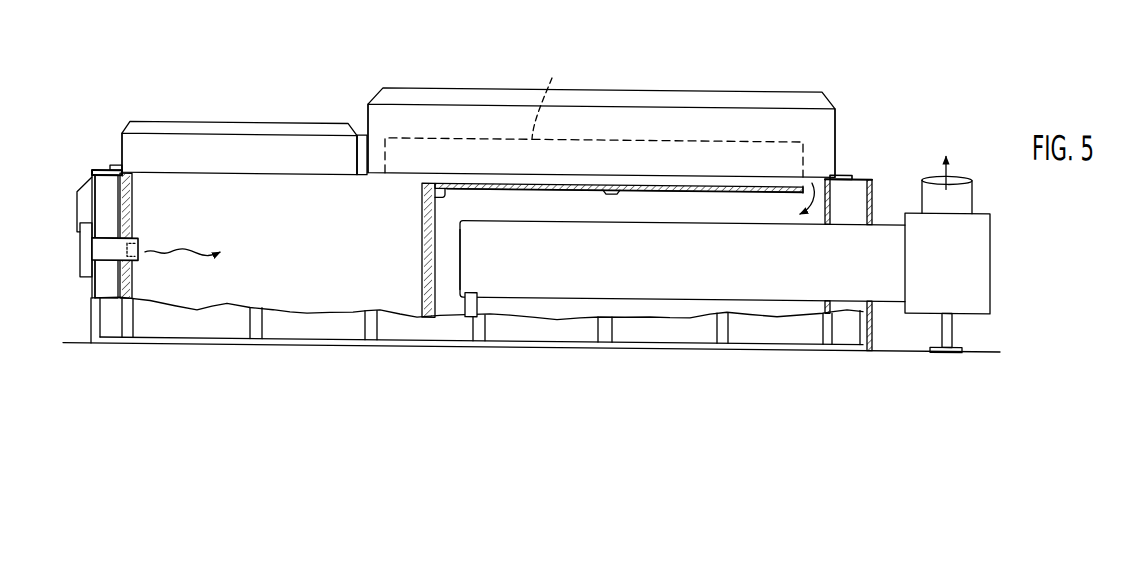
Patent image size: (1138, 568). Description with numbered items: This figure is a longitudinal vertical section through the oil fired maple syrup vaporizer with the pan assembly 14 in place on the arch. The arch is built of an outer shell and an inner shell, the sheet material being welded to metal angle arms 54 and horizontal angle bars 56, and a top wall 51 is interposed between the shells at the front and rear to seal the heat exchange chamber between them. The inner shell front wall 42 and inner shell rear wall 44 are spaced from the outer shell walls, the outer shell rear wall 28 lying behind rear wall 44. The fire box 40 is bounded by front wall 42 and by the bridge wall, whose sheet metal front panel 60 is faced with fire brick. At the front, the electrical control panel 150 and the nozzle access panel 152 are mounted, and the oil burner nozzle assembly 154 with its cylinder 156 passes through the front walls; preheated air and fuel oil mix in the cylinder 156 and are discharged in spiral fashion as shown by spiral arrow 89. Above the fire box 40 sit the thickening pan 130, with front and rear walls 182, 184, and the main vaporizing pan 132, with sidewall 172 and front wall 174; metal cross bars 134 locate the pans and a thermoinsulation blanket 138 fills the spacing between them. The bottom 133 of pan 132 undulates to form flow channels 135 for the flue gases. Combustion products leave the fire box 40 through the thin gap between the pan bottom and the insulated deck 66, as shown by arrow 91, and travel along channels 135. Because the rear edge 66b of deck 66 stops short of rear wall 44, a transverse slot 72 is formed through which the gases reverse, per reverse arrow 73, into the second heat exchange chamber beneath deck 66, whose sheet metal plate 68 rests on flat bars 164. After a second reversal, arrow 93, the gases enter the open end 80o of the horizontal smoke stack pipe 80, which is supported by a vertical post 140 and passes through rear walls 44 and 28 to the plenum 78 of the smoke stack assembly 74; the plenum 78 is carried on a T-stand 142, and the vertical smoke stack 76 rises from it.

The pan assembly 14 is at (598, 57).
The outer shell rear wall 28 is at (876, 197).
The fire box 40 is at (316, 270).
The inner shell front wall 42 is at (118, 199).
The inner shell rear wall 44 is at (828, 202).
The top wall 51 is at (103, 169).
The metal angle arms 54 is at (258, 330).
The horizontal angle bars 56 is at (548, 337).
The bridge wall front panel 60 is at (431, 258).
The insulated deck 66 is at (673, 178).
The rear edge of insulated deck 66b is at (797, 180).
The insulation deck sheet metal plate 68 is at (712, 185).
The transverse gap or slot 72 is at (817, 170).
The reverse arrow 73 is at (812, 192).
The smoke stack assembly 74 is at (998, 242).
The vertical smoke stack 76 is at (952, 176).
The plenum 78 is at (972, 283).
The horizontal smoke stack pipe 80 is at (702, 254).
The open end of pipe 80o is at (453, 256).
The spiral arrow 89 is at (200, 248).
The arrow 91 is at (412, 177).
The arrow 93 is at (453, 234).
The thickening pan 130 is at (222, 97).
The main vaporizing pan 132 is at (667, 85).
The bottom of main vaporizing pan 133 is at (545, 96).
The metal cross bars 134 is at (107, 133).
The flow channels 135 is at (598, 126).
The thermoinsulation blanket 138 is at (363, 131).
The vertical post 140 is at (478, 303).
The T-stand 142 is at (953, 326).
The electrical control panel 150 is at (88, 171).
The nozzle access panel 152 is at (83, 249).
The oil burner nozzle assembly 154 is at (147, 242).
The cylinder 156 is at (108, 254).
The flat bars 164 is at (604, 187).
The sidewall of main vaporizing pan 172 is at (835, 132).
The front wall of main vaporizing pan 174 is at (369, 121).
The front wall of thickening pan 182 is at (123, 149).
The rear wall of thickening pan 184 is at (356, 150).